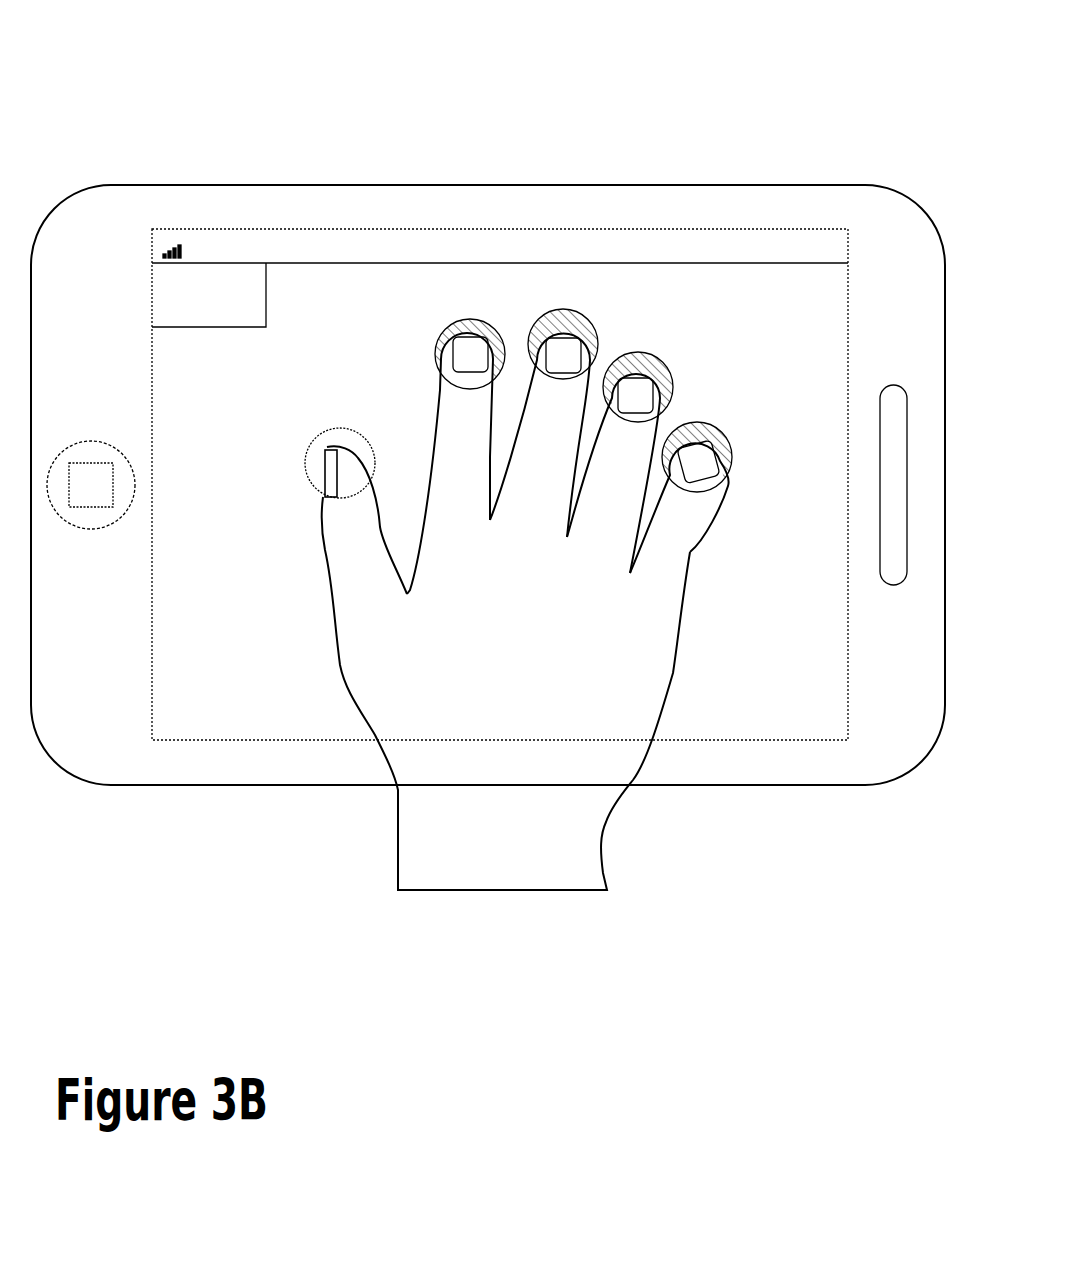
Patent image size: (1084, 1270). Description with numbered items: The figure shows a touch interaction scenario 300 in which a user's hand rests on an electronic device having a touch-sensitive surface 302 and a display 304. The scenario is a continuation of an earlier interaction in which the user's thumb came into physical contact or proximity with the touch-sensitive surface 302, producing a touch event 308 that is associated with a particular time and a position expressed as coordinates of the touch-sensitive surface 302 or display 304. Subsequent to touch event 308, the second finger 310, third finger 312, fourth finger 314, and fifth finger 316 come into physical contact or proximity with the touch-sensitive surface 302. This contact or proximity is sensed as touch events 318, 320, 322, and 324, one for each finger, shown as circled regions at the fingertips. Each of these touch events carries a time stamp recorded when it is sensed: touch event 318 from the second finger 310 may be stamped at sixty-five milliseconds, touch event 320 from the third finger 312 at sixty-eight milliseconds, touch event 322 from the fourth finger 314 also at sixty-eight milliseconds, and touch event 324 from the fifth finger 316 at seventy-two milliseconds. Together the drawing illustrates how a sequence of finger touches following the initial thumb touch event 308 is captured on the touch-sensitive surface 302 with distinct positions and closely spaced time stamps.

The touch interaction scenario 300 is at (667, 95).
The touch-sensitive surface 302 is at (809, 318).
The display 304 is at (190, 230).
The touch event 308 is at (327, 433).
The second finger 310 is at (433, 405).
The third finger 312 is at (533, 392).
The fourth finger 314 is at (598, 405).
The fifth finger 316 is at (693, 548).
The touch event 318 is at (462, 328).
The touch event 320 is at (587, 323).
The touch event 322 is at (651, 355).
The touch event 324 is at (733, 473).